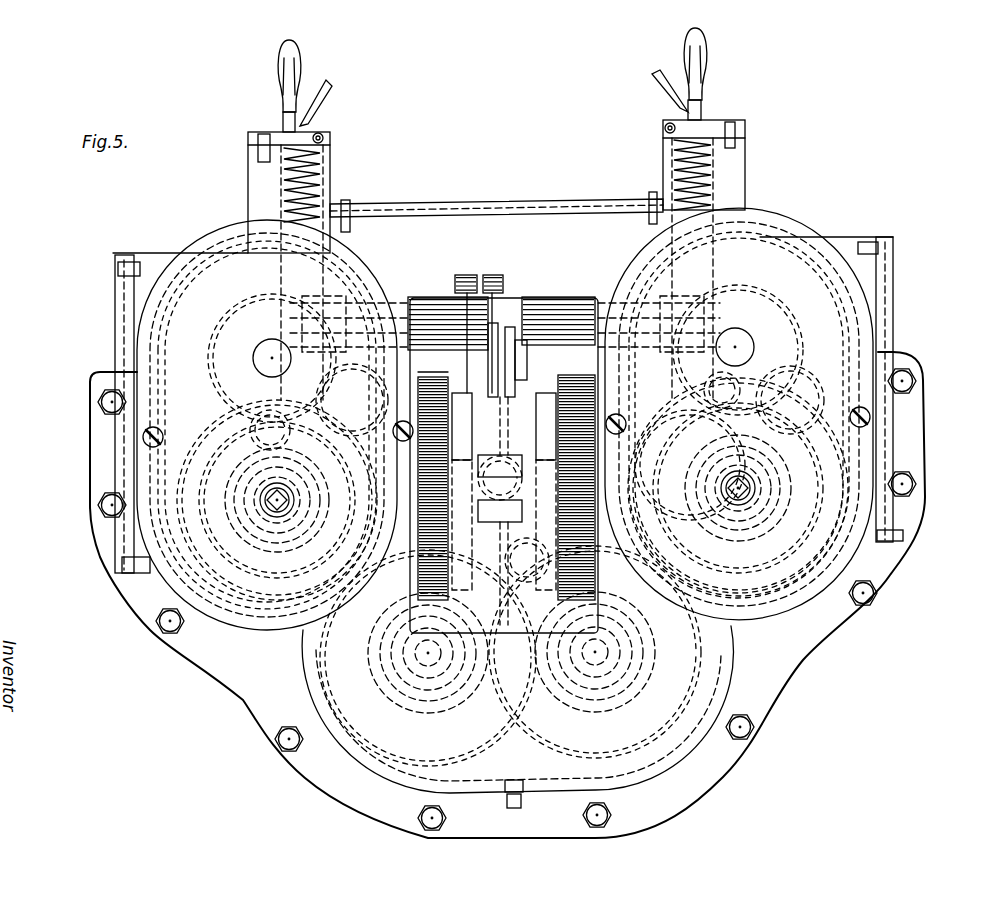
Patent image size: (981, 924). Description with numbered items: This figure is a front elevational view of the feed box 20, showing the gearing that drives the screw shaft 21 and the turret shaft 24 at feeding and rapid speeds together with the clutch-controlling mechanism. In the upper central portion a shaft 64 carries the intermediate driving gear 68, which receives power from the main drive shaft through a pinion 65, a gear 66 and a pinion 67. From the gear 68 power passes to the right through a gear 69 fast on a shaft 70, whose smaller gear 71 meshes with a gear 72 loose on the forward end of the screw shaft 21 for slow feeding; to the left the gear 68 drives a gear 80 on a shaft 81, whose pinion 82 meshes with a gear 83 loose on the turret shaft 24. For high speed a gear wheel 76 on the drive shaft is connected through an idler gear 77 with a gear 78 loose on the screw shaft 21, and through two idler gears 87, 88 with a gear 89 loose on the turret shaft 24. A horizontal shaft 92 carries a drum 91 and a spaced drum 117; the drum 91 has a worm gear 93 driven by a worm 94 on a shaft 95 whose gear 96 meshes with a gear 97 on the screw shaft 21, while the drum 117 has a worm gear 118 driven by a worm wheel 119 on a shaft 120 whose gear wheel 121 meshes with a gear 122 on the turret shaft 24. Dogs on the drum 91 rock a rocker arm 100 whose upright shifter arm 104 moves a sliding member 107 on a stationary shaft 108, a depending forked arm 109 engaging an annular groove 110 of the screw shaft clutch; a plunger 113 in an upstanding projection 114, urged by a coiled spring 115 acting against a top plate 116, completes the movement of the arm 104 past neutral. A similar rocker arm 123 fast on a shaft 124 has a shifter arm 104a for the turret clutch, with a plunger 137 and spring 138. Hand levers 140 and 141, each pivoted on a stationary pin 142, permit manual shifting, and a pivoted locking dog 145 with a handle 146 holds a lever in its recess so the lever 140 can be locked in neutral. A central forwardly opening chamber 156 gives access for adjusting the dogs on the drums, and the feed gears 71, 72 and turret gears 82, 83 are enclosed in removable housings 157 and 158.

The gear casing 20 is at (462, 200).
The screw shaft 21 is at (742, 506).
The turret shaft 24 is at (272, 506).
The shaft 64 is at (445, 476).
The pinion 65 is at (508, 299).
The gear 66 is at (548, 378).
The pinion 67 is at (500, 456).
The gear 68 is at (580, 263).
The gear 69 is at (800, 252).
The shaft 70 is at (752, 345).
The gear 71 is at (792, 322).
The gear 72 is at (880, 489).
The gear wheel 76 is at (501, 422).
The idler gear 77 is at (702, 520).
The gear 78 is at (790, 612).
The gear 80 is at (200, 256).
The shaft 81 is at (264, 342).
The pinion 82 is at (249, 301).
The gear 83 is at (240, 563).
The idler gear 87 is at (505, 642).
The idler gear 88 is at (356, 650).
The gear 89 is at (246, 620).
The drum 91 is at (520, 628).
The shaft 92 is at (668, 416).
The worm gear 93 is at (643, 622).
The worm 94 is at (640, 679).
The shaft 95 is at (597, 668).
The gear 96 is at (682, 740).
The gear 97 is at (825, 608).
The rocker arm 100 is at (546, 299).
The shifter arm 104 is at (778, 216).
The shifter arm 104a is at (358, 233).
The sliding member 107 is at (780, 362).
The stationary shaft 108 is at (796, 392).
The forked arm 109 is at (862, 440).
The annular groove 110 is at (770, 514).
The plunger 113 is at (650, 197).
The upstanding projection 114 is at (743, 181).
The coiled spring 115 is at (722, 176).
The top plate 116 is at (716, 120).
The drum 117 is at (434, 363).
The worm gear 118 is at (395, 380).
The worm wheel 119 is at (440, 706).
The shaft 120 is at (386, 680).
The gear wheel 121 is at (415, 754).
The gear 122 is at (192, 640).
The rocker arm 123 is at (470, 300).
The shaft 124 is at (462, 282).
The plunger 137 is at (350, 204).
The spring 138 is at (332, 168).
The hand lever 140 is at (709, 60).
The hand lever 141 is at (302, 58).
The stationary pin 142 is at (291, 290).
The locking dog 145 is at (326, 135).
The handle 146 is at (335, 93).
The chamber 156 is at (588, 292).
The removable housing 157 is at (865, 324).
The removable housing 158 is at (142, 508).